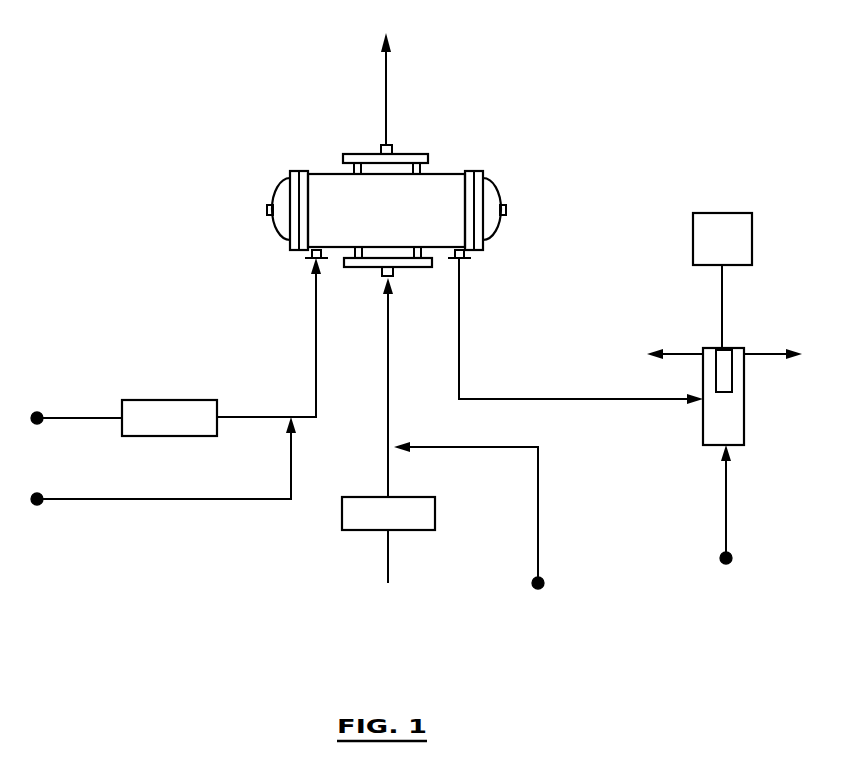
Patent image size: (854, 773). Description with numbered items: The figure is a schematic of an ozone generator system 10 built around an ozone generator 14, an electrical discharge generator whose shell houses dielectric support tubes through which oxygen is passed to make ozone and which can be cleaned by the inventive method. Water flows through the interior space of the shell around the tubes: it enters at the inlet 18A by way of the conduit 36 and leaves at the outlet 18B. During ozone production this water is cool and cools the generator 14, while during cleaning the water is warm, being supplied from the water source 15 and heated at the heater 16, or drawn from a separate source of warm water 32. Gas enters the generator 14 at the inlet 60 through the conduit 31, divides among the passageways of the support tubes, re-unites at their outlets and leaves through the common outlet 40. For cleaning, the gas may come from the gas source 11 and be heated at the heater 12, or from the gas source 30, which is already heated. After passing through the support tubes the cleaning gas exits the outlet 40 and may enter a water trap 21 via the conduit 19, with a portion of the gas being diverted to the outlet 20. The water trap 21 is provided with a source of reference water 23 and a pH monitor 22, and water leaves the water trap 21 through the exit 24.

The ozone generator system 10 is at (141, 198).
The ozone generator 14 is at (508, 163).
The inlet 18A is at (383, 273).
The outlet 18B is at (392, 147).
The inlet 60 is at (311, 258).
The common outlet 40 is at (462, 256).
The conduit 31 is at (315, 353).
The conduit 36 is at (388, 366).
The conduit 19 is at (531, 399).
The heater 12 is at (184, 430).
The gas source 11 is at (58, 420).
The gas source 30 is at (58, 501).
The heater 16 is at (403, 525).
The water source 15 is at (388, 566).
The source of warm water 32 is at (538, 560).
The pH monitor 22 is at (737, 251).
The water trap 21 is at (745, 419).
The outlet 20 is at (690, 353).
The exit 24 is at (767, 353).
The source of reference water 23 is at (726, 530).